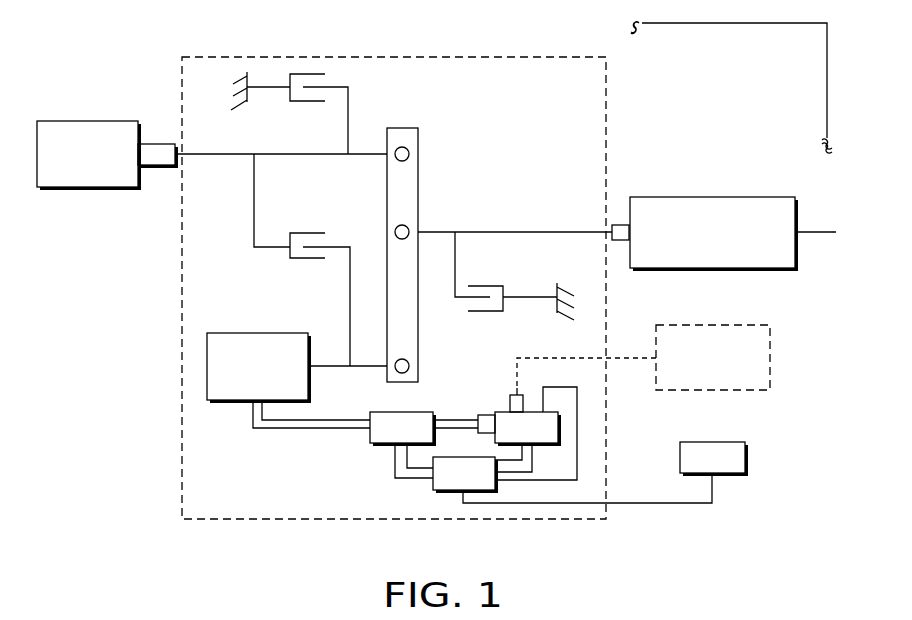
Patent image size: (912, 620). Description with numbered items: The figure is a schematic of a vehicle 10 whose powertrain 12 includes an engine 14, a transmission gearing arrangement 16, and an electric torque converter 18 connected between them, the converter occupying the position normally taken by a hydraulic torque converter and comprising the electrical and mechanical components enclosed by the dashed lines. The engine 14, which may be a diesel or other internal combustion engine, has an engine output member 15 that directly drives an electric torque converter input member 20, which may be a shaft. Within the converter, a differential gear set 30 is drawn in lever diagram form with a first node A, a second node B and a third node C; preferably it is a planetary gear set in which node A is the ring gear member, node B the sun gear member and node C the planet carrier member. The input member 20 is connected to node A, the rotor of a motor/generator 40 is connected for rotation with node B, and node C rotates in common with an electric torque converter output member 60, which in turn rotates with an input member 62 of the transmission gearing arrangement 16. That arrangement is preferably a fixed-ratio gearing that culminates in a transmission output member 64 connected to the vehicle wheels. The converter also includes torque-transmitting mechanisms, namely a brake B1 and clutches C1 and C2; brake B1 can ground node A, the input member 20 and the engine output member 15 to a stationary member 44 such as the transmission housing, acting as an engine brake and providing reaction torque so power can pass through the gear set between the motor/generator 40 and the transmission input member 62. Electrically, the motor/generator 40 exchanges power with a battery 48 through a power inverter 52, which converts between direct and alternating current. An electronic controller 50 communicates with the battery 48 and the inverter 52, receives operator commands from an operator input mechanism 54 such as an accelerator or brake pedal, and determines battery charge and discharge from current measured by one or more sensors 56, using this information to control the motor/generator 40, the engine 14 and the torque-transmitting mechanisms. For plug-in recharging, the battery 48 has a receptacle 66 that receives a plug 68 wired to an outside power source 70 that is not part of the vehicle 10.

The vehicle 10 is at (827, 85).
The powertrain 12 is at (165, 55).
The engine 14 is at (88, 121).
The engine output member 15 is at (161, 144).
The transmission gearing arrangement 16 is at (713, 197).
The electric torque converter 18 is at (453, 57).
The electric torque converter input member 20 is at (229, 156).
The differential gear set 30 is at (434, 104).
The motor/generator 40 is at (297, 368).
The stationary member 44 is at (240, 72).
The energy storage device 48 is at (545, 446).
The electronic controller 50 is at (446, 493).
The power inverter 52 is at (383, 446).
The operator input mechanism 54 is at (712, 442).
The sensor 56 is at (481, 414).
The electric torque converter output member 60 is at (518, 232).
The transmission input member 62 is at (618, 224).
The transmission output member 64 is at (826, 232).
The receptacle 66 is at (506, 408).
The plug 68 is at (507, 394).
The outside power source 70 is at (712, 325).
The first node A is at (405, 146).
The second node B is at (410, 367).
The third node C is at (405, 225).
The brake B1 is at (314, 68).
The clutch C1 is at (312, 227).
The clutch C2 is at (485, 279).